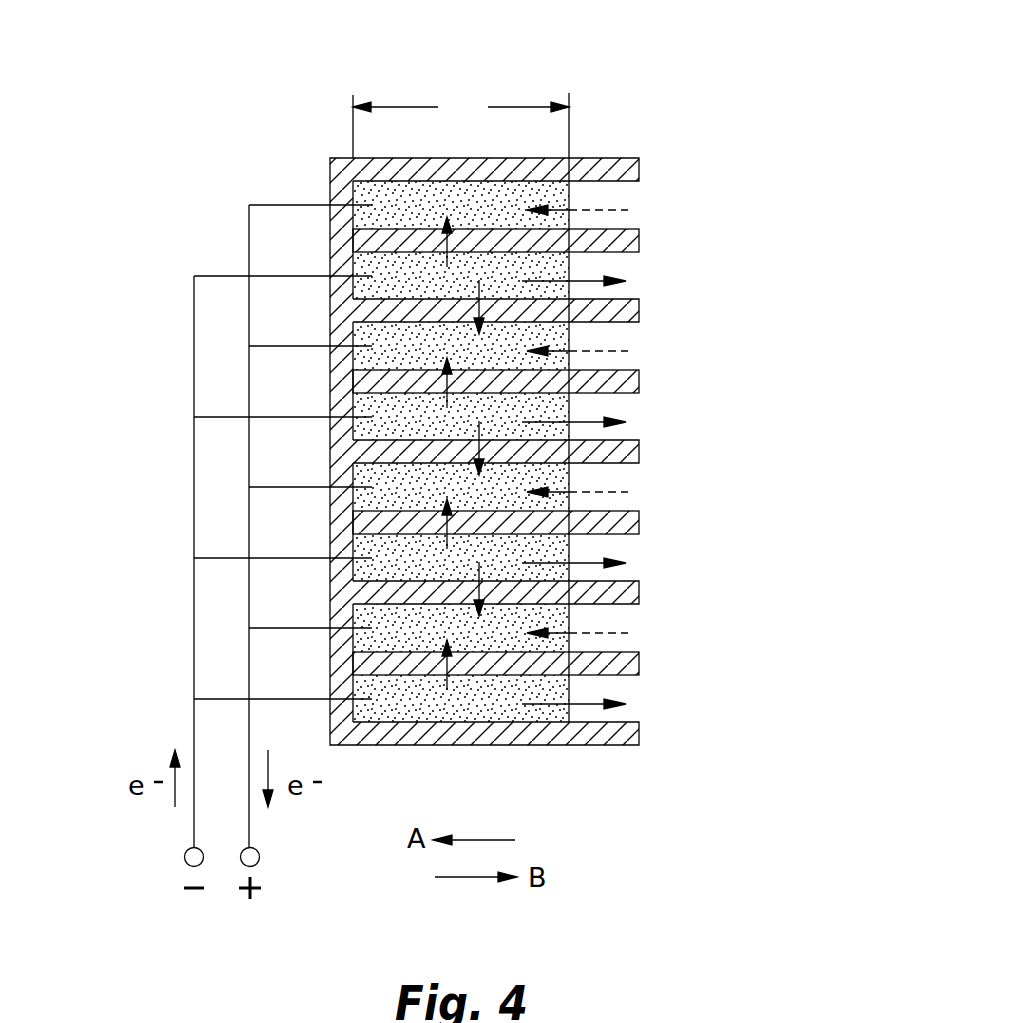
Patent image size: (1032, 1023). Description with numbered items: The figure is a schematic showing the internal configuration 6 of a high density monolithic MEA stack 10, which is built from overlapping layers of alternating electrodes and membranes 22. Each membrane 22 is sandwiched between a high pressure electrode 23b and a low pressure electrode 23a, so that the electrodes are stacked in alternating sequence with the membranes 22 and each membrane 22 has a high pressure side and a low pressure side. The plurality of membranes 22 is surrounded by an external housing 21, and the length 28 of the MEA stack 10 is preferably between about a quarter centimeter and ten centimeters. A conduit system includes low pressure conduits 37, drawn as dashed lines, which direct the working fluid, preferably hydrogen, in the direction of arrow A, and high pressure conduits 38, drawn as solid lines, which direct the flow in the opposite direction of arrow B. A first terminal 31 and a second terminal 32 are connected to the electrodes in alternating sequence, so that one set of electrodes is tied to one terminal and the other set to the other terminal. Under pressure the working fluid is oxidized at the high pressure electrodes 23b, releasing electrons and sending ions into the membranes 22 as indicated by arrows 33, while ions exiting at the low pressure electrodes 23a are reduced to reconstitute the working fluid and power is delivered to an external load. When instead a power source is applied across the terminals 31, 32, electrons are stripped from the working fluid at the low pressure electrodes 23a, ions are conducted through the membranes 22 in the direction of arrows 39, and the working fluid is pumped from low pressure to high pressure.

The MEA stack 10 is at (527, 414).
The external housing 21 is at (592, 158).
The membrane 22 is at (570, 340).
The low pressure electrode 23a is at (570, 199).
The high pressure electrode 23b is at (570, 270).
The length 28 is at (461, 109).
The first terminal 31 is at (212, 275).
The second terminal 32 is at (268, 205).
The arrows 33 is at (448, 677).
The low pressure conduit 37 is at (628, 210).
The high pressure conduit 38 is at (627, 281).
The arrows 39 is at (478, 298).
The internal configuration 6 is at (418, 730).